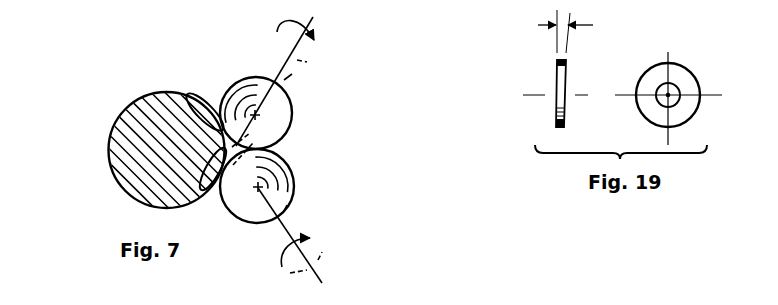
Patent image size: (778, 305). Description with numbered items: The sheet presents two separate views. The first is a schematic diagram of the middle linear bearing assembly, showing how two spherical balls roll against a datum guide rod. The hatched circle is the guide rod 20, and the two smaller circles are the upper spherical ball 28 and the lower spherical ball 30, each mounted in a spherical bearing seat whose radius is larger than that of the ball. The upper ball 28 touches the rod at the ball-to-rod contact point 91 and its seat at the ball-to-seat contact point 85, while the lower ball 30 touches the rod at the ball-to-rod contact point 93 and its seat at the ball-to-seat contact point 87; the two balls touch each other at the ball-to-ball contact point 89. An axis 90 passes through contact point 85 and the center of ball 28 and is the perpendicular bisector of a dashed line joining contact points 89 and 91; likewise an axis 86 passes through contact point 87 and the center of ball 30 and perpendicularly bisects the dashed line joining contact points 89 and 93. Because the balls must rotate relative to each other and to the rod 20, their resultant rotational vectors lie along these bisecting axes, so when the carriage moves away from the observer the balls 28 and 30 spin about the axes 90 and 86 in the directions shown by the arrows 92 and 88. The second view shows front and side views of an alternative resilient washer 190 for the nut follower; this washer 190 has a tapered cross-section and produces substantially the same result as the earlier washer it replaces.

In FIG. 7, the guide rod 20 is at (118, 115).
In FIG. 7, the upper spherical ball 28 is at (290, 98).
In FIG. 7, the lower spherical ball 30 is at (290, 167).
In FIG. 7, the ball-to-seat contact point 85 is at (283, 79).
In FIG. 7, the axis 86 is at (322, 282).
In FIG. 7, the ball-to-seat contact point 87 is at (283, 213).
In FIG. 7, the arrow 88 is at (313, 237).
In FIG. 7, the ball-to-ball contact point 89 is at (291, 133).
In FIG. 7, the axis 90 is at (313, 18).
In FIG. 7, the ball-to-rod contact point 91 is at (188, 96).
In FIG. 7, the arrow 92 is at (318, 43).
In FIG. 7, the ball-to-rod contact point 93 is at (200, 207).
In FIG. 19, the washer 190 is at (565, 108).